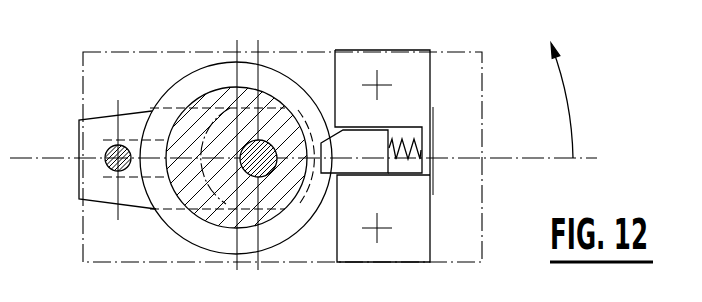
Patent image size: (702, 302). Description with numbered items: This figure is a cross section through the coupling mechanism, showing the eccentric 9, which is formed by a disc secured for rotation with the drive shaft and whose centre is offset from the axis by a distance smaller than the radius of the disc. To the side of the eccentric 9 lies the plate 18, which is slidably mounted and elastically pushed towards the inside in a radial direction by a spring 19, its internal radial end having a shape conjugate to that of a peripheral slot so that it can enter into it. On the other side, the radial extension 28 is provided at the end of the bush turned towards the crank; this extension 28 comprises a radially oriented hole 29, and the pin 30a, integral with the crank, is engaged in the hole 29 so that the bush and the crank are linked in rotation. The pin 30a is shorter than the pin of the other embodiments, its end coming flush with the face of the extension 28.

The eccentric 9 is at (192, 118).
The plate 18 is at (353, 140).
The spring 19 is at (420, 145).
The radial extension 28 is at (97, 132).
The hole 29 is at (133, 172).
The pin 30a is at (107, 168).